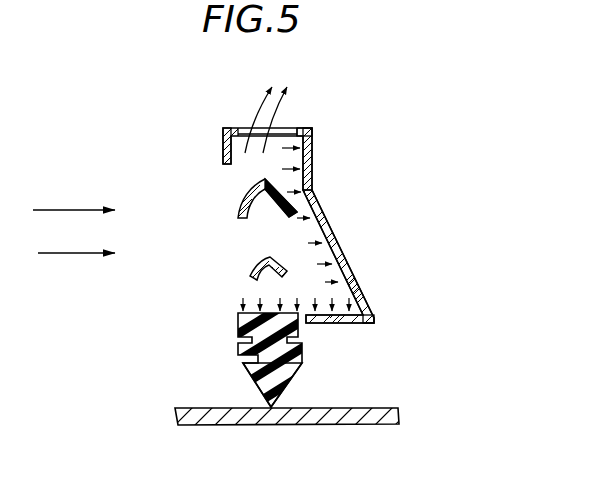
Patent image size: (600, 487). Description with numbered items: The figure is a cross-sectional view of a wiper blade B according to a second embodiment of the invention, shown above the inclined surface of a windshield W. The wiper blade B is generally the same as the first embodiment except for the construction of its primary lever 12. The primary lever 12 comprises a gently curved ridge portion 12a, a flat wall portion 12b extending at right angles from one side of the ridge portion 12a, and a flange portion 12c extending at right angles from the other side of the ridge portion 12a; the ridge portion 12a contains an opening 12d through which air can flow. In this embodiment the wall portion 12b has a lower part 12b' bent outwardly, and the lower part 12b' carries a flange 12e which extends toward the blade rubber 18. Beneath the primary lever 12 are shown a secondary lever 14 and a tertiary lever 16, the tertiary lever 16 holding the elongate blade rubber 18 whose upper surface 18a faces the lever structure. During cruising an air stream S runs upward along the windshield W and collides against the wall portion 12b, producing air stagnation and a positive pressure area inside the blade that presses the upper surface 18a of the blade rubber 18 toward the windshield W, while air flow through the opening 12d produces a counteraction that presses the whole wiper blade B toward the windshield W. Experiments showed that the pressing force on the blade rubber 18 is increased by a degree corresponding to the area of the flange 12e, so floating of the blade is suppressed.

The primary lever 12 is at (286, 210).
The ridge portion 12a is at (302, 126).
The flat wall portion 12b is at (348, 159).
The lower part of the wall portion 12b' is at (357, 256).
The flange portion 12c is at (228, 150).
The opening 12d is at (245, 129).
The flange 12e is at (332, 323).
The secondary lever 14 is at (242, 200).
The tertiary lever 16 is at (248, 265).
The blade rubber 18 is at (248, 372).
The upper surface of the blade rubber 18a is at (242, 354).
The windshield W is at (358, 408).
The wiper blade B is at (367, 148).
The air stream S is at (67, 253).